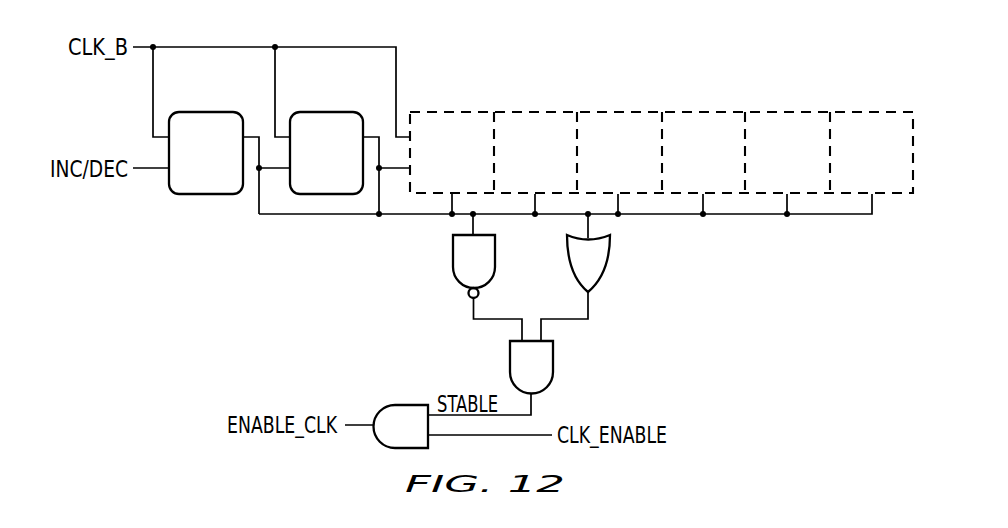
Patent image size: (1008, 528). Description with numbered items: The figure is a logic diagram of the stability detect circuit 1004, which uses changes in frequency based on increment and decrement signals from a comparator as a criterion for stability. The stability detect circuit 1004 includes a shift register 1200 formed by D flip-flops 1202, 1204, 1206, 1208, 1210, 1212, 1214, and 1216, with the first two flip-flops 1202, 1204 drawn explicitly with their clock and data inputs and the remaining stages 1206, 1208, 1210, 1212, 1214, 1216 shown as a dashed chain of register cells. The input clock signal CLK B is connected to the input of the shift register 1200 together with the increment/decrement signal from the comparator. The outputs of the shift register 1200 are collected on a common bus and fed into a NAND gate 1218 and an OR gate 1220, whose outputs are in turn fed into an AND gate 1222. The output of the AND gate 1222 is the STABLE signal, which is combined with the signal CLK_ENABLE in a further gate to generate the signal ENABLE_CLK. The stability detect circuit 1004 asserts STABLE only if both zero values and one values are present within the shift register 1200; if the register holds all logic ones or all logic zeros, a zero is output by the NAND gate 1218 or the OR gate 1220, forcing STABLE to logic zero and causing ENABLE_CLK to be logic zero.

The stability detect circuit 1004 is at (570, 68).
The shift register 1200 is at (688, 111).
The D flip-flop 1202 is at (206, 195).
The D flip-flop 1204 is at (326, 112).
The D flip-flop 1206 is at (481, 164).
The D flip-flop 1208 is at (564, 164).
The D flip-flop 1210 is at (648, 164).
The D flip-flop 1212 is at (732, 164).
The D flip-flop 1214 is at (816, 164).
The D flip-flop 1216 is at (900, 164).
The NAND gate 1218 is at (453, 256).
The OR gate 1220 is at (609, 265).
The AND gate 1222 is at (553, 362).